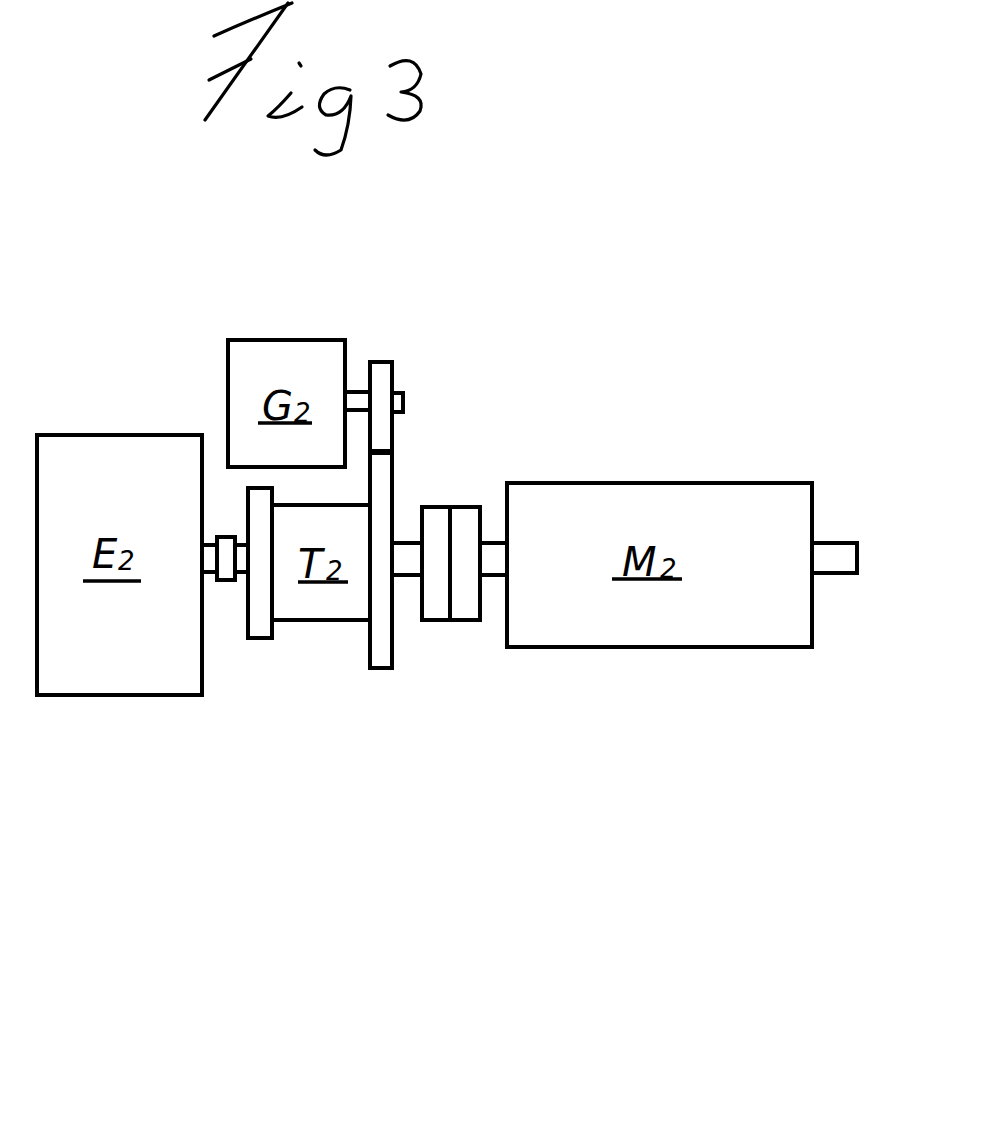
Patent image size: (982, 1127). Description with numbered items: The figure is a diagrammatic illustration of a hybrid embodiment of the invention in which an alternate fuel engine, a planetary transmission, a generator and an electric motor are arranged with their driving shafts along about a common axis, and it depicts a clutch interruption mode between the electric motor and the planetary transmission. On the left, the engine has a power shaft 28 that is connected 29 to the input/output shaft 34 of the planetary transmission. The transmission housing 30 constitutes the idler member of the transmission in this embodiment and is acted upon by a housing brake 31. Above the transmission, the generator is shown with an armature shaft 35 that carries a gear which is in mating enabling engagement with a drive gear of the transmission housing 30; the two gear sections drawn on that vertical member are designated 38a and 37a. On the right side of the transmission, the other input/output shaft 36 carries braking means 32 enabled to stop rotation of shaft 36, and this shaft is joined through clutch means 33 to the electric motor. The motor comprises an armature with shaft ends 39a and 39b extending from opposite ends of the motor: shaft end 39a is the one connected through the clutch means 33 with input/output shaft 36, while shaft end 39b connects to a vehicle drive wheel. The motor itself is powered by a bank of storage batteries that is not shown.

The power shaft 28 is at (212, 582).
The connection 29 is at (230, 537).
The planetary transmission housing 30 is at (318, 605).
The housing brake 31 is at (258, 640).
The braking means 32 is at (436, 518).
The clutch means 33 is at (465, 518).
The input/output shaft 34 is at (238, 582).
The armature shaft 35 is at (405, 398).
The input/output shaft 36 is at (405, 577).
The lower gear section 37a is at (385, 655).
The upper gear section 38a is at (385, 380).
The shaft end 39a is at (490, 577).
The shaft end 39b is at (830, 560).